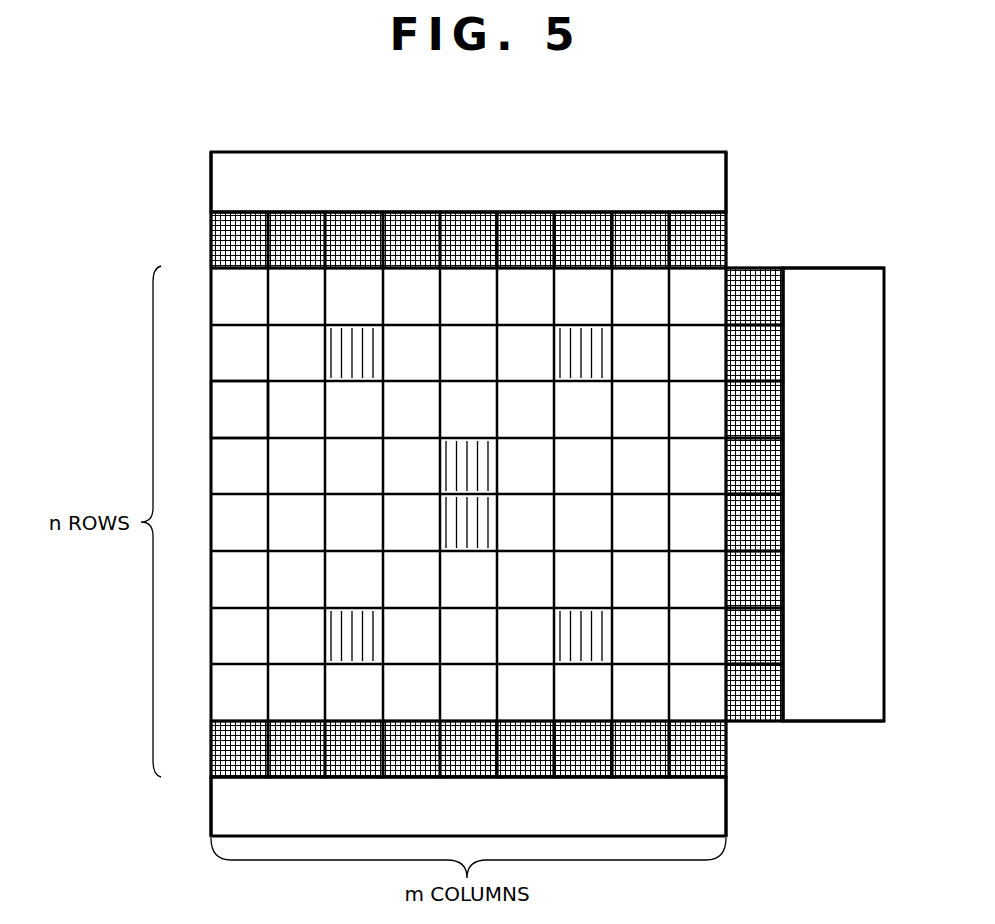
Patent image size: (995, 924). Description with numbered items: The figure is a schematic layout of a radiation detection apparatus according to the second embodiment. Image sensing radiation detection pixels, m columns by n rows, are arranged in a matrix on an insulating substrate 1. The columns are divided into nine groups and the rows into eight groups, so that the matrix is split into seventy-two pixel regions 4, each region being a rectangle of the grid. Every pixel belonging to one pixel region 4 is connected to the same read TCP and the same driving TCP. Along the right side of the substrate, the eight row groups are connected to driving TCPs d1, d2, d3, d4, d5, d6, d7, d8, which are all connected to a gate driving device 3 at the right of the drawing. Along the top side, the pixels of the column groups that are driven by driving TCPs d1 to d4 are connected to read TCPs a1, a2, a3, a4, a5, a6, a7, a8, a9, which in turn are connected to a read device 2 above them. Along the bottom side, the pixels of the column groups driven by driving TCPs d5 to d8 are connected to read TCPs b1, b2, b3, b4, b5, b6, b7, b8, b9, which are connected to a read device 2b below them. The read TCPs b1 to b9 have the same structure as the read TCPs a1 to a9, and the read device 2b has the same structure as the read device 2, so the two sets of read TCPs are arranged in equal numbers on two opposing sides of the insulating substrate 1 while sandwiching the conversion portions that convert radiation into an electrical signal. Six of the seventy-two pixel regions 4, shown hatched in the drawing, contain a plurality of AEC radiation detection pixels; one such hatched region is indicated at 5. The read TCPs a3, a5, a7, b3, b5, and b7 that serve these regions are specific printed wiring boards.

The insulating substrate 1 is at (211, 594).
The read device 2 is at (478, 152).
The read device 2b is at (726, 808).
The gate driving device 3 is at (832, 268).
The pixel region 4 is at (250, 423).
The defective pixel 5 is at (340, 645).
The read TCP a1 is at (243, 228).
The read TCP a2 is at (300, 228).
The read TCP a3 is at (352, 228).
The read TCP a4 is at (413, 253).
The read TCP a5 is at (472, 253).
The read TCP a6 is at (532, 253).
The read TCP a7 is at (592, 228).
The read TCP a8 is at (643, 228).
The read TCP a9 is at (695, 228).
The read TCP b1 is at (241, 741).
The read TCP b2 is at (298, 741).
The read TCP b3 is at (355, 741).
The read TCP b4 is at (413, 741).
The read TCP b5 is at (470, 741).
The read TCP b6 is at (527, 741).
The read TCP b7 is at (584, 741).
The read TCP b8 is at (641, 741).
The read TCP b9 is at (717, 752).
The driving TCP d1 is at (742, 300).
The driving TCP d2 is at (742, 357).
The driving TCP d3 is at (742, 413).
The driving TCP d4 is at (742, 470).
The driving TCP d5 is at (742, 526).
The driving TCP d6 is at (742, 583).
The driving TCP d7 is at (742, 640).
The driving TCP d8 is at (742, 697).